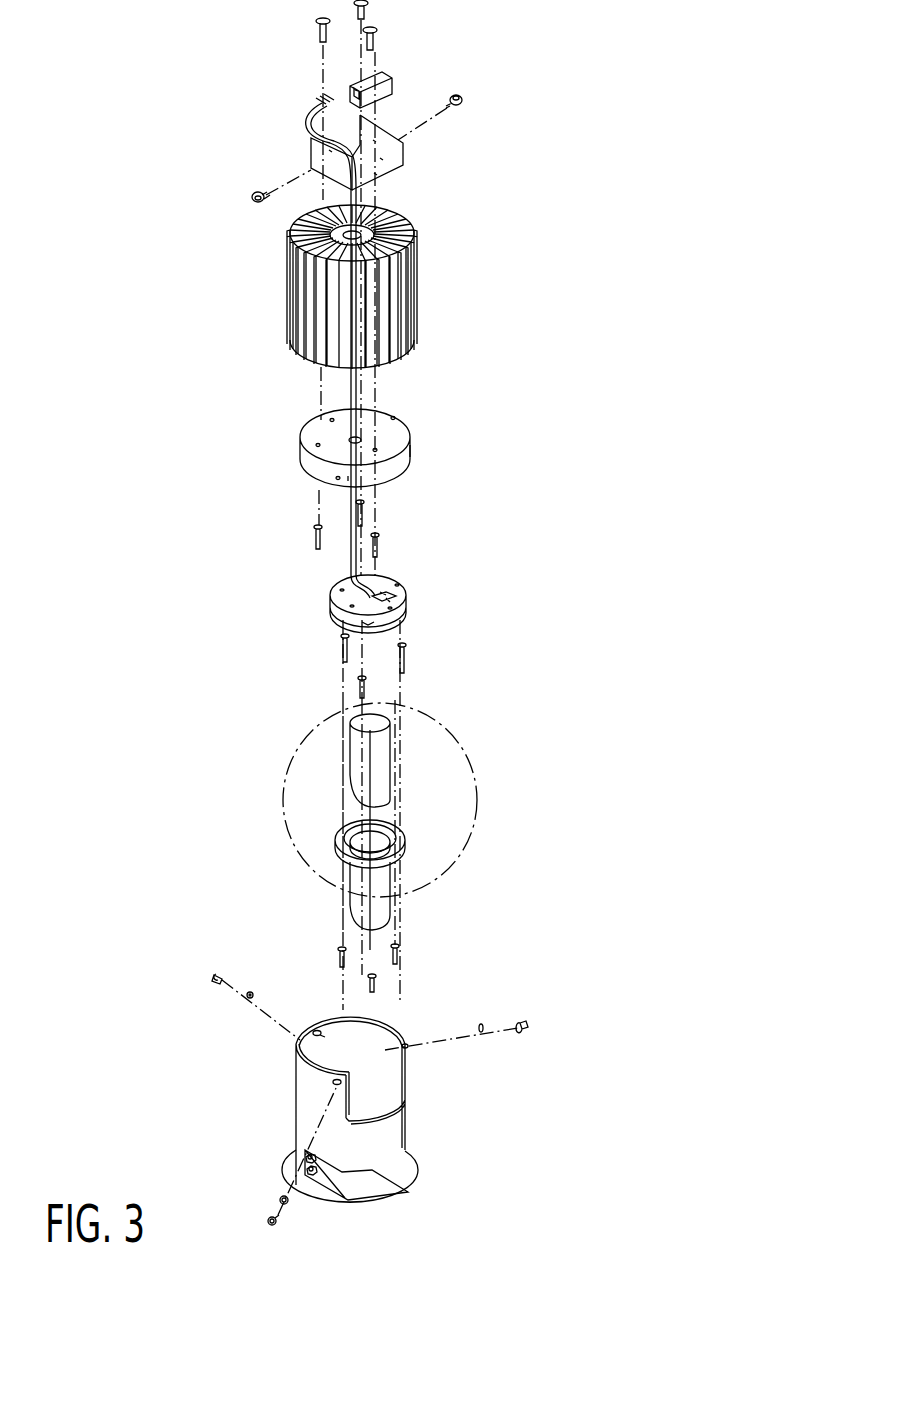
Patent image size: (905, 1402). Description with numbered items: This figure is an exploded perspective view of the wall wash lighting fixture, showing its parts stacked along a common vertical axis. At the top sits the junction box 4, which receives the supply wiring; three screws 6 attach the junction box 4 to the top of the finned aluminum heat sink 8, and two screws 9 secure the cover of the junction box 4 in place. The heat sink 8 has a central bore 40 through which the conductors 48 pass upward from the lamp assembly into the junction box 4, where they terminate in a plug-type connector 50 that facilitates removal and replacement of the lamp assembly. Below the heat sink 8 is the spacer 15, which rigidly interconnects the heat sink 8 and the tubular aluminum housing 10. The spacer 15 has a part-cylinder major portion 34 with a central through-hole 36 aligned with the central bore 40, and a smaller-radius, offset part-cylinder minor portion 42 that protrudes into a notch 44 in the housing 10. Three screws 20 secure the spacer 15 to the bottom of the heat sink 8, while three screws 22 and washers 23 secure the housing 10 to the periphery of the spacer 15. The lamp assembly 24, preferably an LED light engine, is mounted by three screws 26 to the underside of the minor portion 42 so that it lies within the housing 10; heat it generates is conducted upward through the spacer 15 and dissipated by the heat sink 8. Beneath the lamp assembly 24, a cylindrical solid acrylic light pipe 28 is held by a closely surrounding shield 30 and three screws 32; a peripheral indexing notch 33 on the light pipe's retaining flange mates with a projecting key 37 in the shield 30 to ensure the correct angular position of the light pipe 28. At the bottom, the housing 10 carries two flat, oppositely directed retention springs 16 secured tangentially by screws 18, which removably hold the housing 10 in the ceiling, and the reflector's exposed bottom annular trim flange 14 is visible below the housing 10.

The junction box 4 is at (303, 150).
The screws 6 is at (315, 34).
The heat sink 8 is at (322, 287).
The screws 9 is at (467, 104).
The housing 10 is at (345, 1101).
The trim flange 14 is at (412, 1165).
The spacer 15 is at (347, 461).
The retention springs 16 is at (396, 1190).
The screws 18 is at (318, 1158).
The screws 20 is at (380, 553).
The screws 22 is at (214, 990).
The washers 23 is at (275, 1200).
The lamp assembly 24 is at (325, 602).
The screws 26 is at (350, 687).
The light pipe 28 is at (342, 758).
The shield 30 is at (358, 840).
The screws 32 is at (336, 957).
The indexing notch 33 is at (398, 734).
The major portion 34 is at (394, 431).
The through-hole 36 is at (360, 442).
The key 37 is at (394, 856).
The central bore 40 is at (330, 236).
The minor portion 42 is at (394, 480).
The notch 44 is at (410, 1070).
The conductors 48 is at (375, 157).
The plug-type connector 50 is at (393, 90).